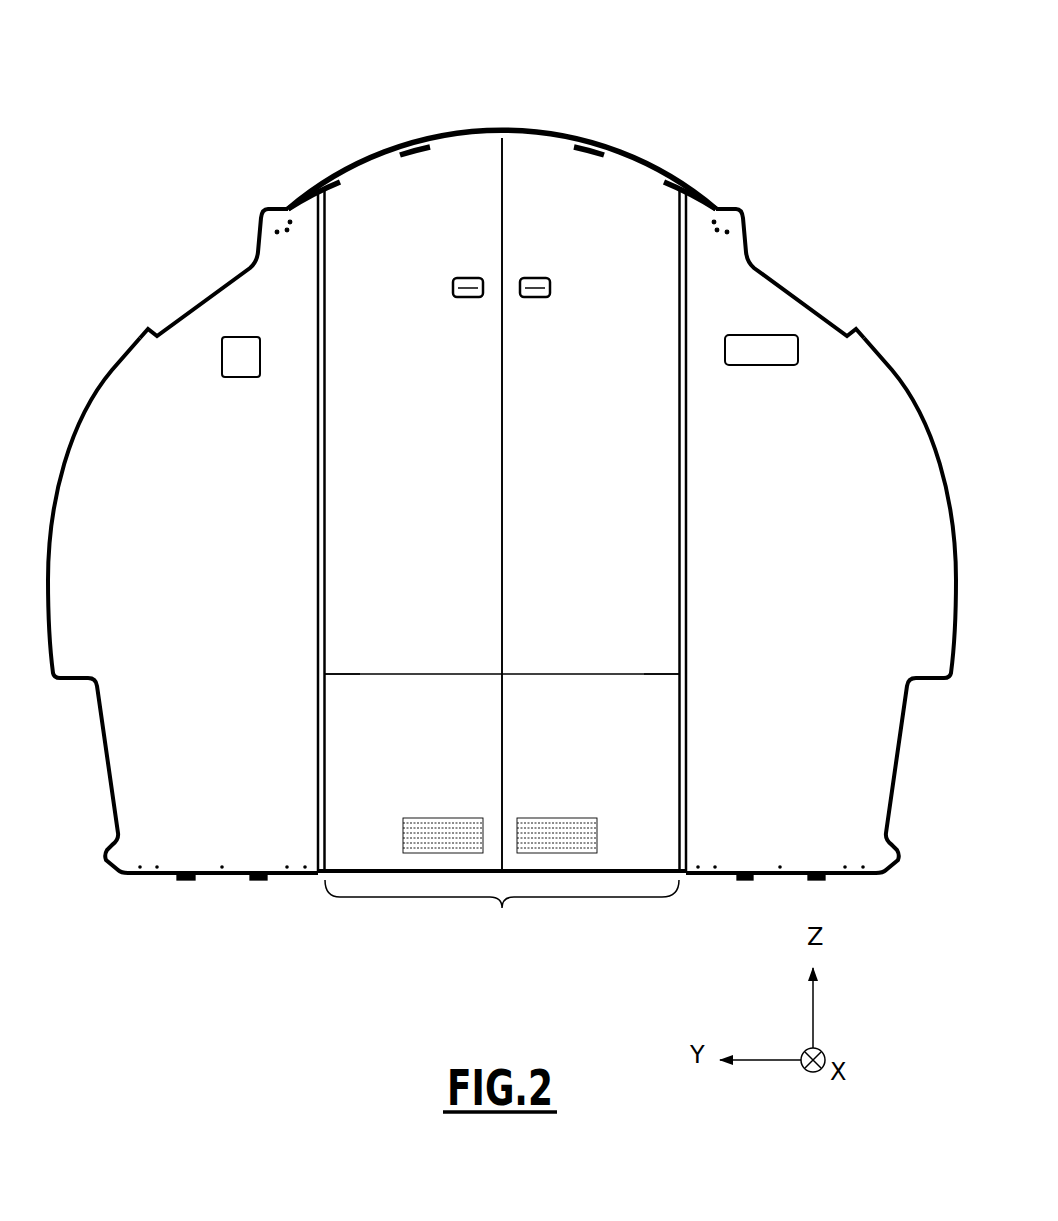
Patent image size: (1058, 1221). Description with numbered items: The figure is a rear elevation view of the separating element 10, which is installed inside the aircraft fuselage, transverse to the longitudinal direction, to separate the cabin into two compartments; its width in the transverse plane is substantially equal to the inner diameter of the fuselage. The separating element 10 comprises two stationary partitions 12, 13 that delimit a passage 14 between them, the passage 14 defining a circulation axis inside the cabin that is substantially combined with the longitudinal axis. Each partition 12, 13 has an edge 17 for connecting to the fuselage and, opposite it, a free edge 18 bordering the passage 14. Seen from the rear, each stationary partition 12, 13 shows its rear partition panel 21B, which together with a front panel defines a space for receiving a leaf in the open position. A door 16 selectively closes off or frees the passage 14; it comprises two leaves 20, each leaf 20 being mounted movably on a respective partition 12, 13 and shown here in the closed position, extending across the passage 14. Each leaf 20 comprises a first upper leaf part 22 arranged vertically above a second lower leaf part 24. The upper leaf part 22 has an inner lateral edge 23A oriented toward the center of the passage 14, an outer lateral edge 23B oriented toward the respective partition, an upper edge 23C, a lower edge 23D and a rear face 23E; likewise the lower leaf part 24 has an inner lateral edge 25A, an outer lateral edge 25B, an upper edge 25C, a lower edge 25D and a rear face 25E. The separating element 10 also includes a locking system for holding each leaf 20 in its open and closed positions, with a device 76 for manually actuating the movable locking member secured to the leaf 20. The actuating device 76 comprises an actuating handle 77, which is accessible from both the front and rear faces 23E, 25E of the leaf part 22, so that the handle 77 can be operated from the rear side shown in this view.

The separating element 10 is at (232, 158).
The stationary partition 12 is at (800, 283).
The stationary partition 13 is at (205, 283).
The passage 14 is at (502, 882).
The door 16 is at (505, 120).
The edge 17 is at (85, 400).
The free edge 18 is at (325, 370).
The leaf 20 is at (335, 162).
The rear partition panel 21B is at (212, 568).
The first upper leaf part 22 is at (357, 557).
The inner lateral edge 23A is at (503, 413).
The outer lateral edge 23B is at (317, 443).
The upper edge 23C is at (412, 150).
The lower edge 23D is at (402, 672).
The rear face 23E is at (428, 473).
The second lower leaf part 24 is at (342, 753).
The inner lateral edge 25A is at (502, 692).
The outer lateral edge 25B is at (317, 692).
The upper edge 25C is at (350, 675).
The lower edge 25D is at (352, 868).
The rear face 25E is at (427, 767).
The actuating device 76 is at (468, 304).
The actuating handle 77 is at (453, 288).